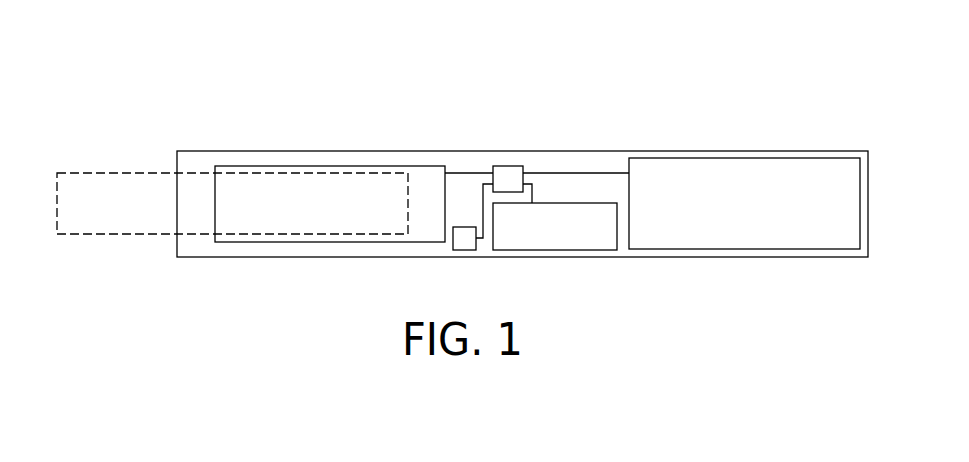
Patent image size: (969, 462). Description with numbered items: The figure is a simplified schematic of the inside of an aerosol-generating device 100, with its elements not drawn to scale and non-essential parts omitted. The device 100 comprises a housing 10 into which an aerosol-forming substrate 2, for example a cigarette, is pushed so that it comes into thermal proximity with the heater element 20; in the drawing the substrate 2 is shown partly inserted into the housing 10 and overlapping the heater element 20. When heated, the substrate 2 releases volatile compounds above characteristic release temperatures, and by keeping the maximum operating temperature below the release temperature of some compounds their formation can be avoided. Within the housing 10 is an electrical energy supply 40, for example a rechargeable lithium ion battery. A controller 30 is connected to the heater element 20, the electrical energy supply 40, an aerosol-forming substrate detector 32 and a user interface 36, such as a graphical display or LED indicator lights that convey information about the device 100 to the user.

The aerosol-generating device 100 is at (193, 114).
The aerosol-forming substrate 2 is at (97, 173).
The housing 10 is at (268, 150).
The heater element 20 is at (428, 166).
The controller 30 is at (510, 166).
The aerosol-forming substrate detector 32 is at (458, 258).
The user interface 36 is at (553, 250).
The electrical energy supply 40 is at (741, 165).